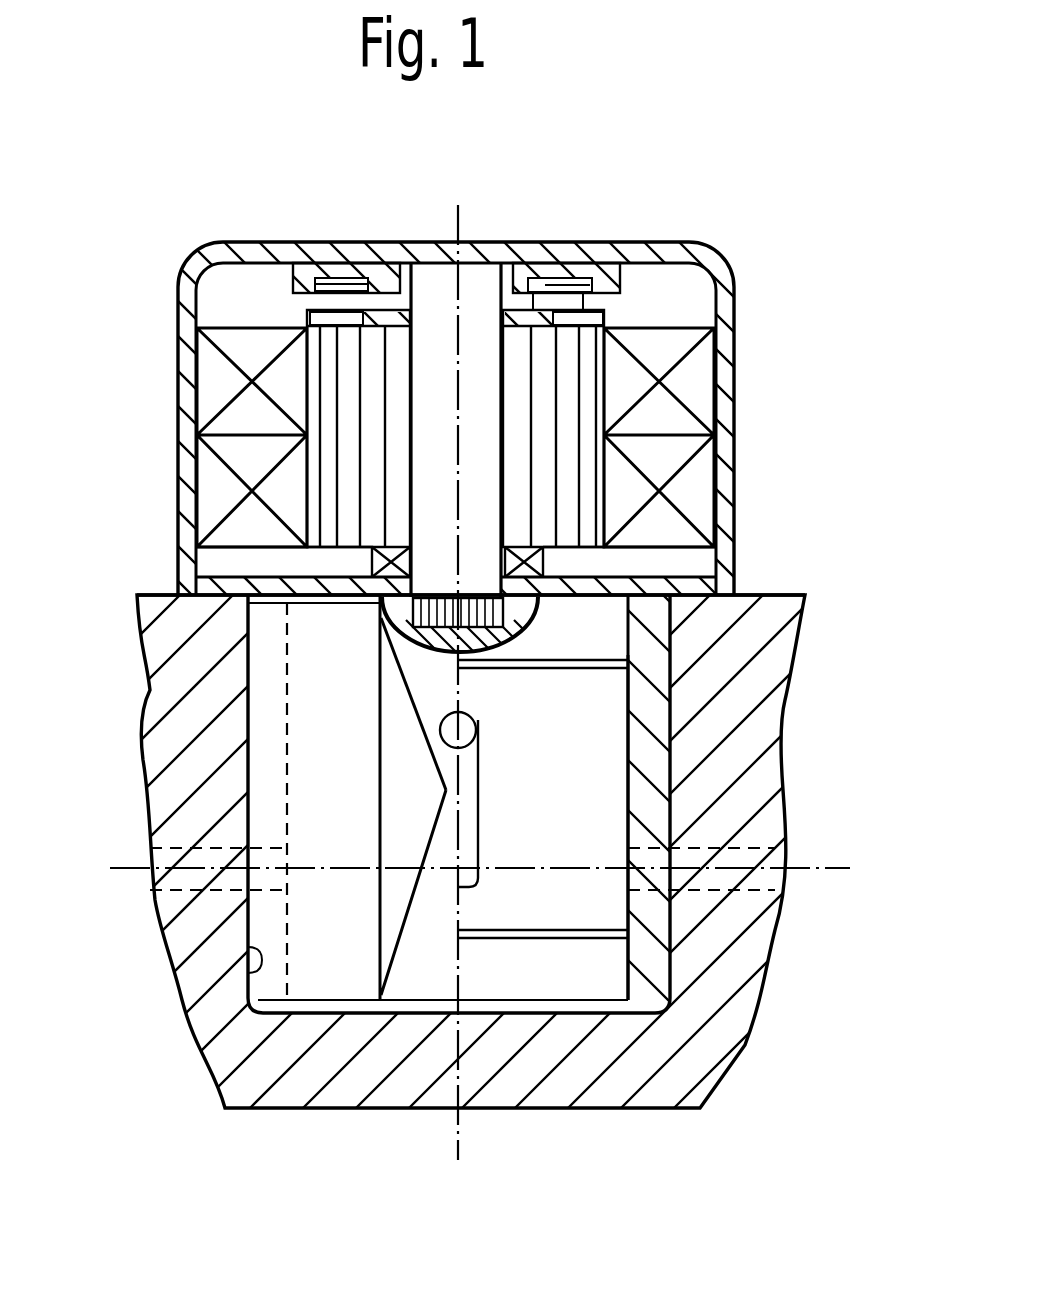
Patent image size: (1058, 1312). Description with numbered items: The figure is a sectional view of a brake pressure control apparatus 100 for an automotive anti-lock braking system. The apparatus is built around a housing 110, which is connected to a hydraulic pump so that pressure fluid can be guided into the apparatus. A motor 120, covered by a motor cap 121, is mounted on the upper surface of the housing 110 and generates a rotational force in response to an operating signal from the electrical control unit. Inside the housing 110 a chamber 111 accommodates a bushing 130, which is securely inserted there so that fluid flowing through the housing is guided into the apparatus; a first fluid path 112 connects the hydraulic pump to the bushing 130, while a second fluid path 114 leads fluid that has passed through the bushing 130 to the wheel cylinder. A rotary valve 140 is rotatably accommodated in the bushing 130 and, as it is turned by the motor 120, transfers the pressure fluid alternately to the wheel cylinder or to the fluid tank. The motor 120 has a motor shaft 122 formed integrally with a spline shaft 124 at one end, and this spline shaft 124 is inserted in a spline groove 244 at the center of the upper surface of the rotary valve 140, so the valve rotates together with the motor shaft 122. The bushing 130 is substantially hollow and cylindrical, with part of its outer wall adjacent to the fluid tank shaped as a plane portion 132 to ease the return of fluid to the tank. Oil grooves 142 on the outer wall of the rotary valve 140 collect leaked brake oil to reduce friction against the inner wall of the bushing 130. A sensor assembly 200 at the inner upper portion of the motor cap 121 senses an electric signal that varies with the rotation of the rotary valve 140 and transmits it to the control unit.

The brake pressure control apparatus 100 is at (529, 671).
The housing 110 is at (720, 1068).
The chamber 111 is at (255, 970).
The first fluid path 112 is at (755, 893).
The second fluid path 114 is at (183, 893).
The motor 120 is at (529, 378).
The motor cap 121 is at (688, 258).
The motor shaft 122 is at (472, 425).
The spline shaft 124 is at (545, 607).
The bushing 130 is at (652, 728).
The plane portion 132 is at (254, 756).
The rotary valve 140 is at (578, 790).
The oil grooves 142 is at (590, 658).
The sensor assembly 200 is at (252, 287).
The spline groove 244 is at (380, 618).